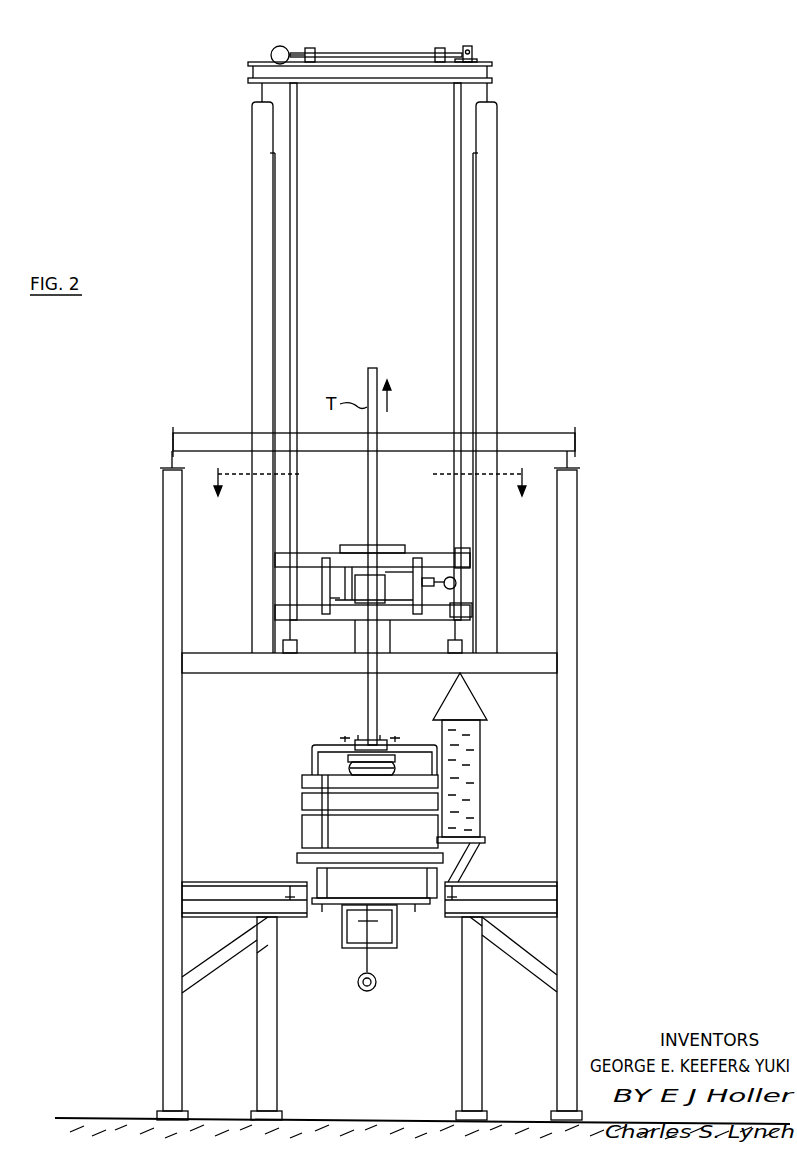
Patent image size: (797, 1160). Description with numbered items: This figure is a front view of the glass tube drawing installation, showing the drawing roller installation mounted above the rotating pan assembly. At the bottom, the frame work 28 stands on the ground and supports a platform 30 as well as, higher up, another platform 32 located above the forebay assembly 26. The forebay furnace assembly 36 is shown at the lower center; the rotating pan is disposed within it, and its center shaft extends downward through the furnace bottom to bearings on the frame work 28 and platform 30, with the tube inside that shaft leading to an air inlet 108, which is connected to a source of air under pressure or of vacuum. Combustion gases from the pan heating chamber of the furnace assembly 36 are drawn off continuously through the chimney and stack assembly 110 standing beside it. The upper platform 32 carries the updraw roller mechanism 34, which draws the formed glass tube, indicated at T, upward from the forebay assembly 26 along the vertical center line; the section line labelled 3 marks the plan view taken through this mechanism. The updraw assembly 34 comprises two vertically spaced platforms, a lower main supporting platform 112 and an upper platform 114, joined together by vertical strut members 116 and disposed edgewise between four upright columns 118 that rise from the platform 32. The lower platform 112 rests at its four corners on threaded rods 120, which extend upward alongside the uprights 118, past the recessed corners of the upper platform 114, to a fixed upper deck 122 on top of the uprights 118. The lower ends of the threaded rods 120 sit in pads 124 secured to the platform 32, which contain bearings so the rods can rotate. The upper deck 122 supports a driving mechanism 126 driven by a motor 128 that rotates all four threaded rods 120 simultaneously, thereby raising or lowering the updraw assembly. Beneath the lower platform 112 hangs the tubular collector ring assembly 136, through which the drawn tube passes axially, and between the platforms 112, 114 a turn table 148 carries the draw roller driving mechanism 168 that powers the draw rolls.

The forebay assembly 26 is at (336, 878).
The frame work 28 is at (166, 862).
The platform 30 is at (250, 881).
The platform 32 is at (205, 662).
The updraw roller mechanism 34 is at (335, 566).
The furnace assembly 36 is at (301, 830).
The air inlet 108 is at (377, 984).
The chimney and stack assembly 110 is at (484, 740).
The lower main supporting platform 112 is at (275, 610).
The upper platform 114 is at (275, 563).
The vertical strut members 116 is at (330, 613).
The upright columns 118 is at (252, 207).
The threaded rods 120 is at (297, 184).
The upper deck 122 is at (488, 72).
The pads 124 is at (290, 652).
The driving mechanism 126 is at (386, 46).
The motor 128 is at (284, 50).
The collector ring assembly 136 is at (380, 642).
The turn table 148 is at (347, 601).
The draw roller driving mechanism 168 is at (440, 558).
The section line for FIG. 3 is at (368, 492).